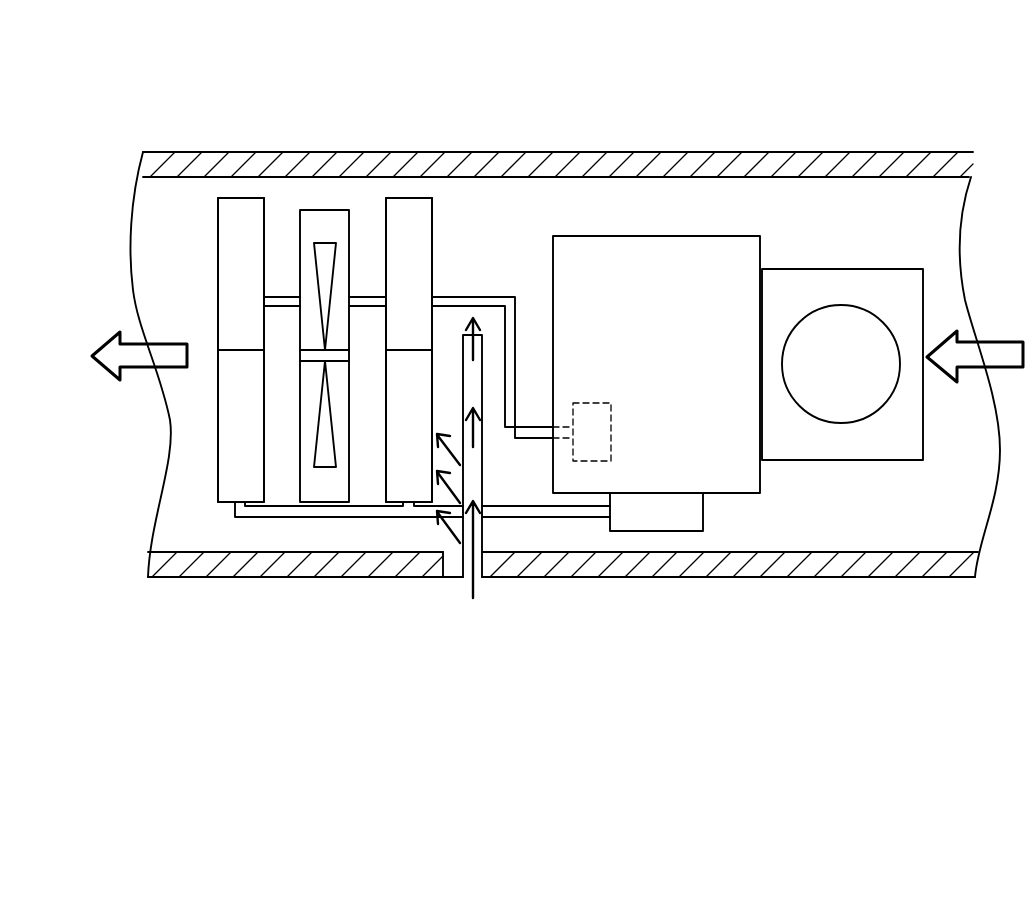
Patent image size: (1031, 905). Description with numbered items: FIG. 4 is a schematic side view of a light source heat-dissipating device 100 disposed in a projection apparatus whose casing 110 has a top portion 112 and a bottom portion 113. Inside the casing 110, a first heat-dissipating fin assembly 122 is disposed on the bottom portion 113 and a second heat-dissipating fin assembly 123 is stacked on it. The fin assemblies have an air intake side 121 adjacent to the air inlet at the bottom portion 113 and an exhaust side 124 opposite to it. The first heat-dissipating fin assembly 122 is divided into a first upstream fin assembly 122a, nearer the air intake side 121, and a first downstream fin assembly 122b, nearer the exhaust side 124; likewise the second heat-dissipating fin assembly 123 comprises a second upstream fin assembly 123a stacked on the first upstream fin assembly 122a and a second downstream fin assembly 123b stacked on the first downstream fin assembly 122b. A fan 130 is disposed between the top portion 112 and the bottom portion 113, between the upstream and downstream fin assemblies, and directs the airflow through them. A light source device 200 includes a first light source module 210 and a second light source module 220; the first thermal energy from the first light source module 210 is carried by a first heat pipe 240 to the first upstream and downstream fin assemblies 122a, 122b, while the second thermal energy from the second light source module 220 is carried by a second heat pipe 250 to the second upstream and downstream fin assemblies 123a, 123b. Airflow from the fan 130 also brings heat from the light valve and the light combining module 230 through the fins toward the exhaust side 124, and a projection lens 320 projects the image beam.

The light source heat-dissipating device 100 is at (101, 42).
The casing 110 is at (713, 150).
The top portion 112 is at (557, 165).
The bottom portion 113 is at (197, 570).
The air intake side 121 is at (437, 222).
The first heat-dissipating fin assembly 122 is at (390, 633).
The first upstream fin assembly 122a is at (392, 482).
The first downstream fin assembly 122b is at (257, 482).
The second heat-dissipating fin assembly 123 is at (393, 72).
The second upstream fin assembly 123a is at (403, 210).
The second downstream fin assembly 123b is at (245, 210).
The exhaust side 124 is at (215, 222).
The fan 130 is at (300, 255).
The light source device 200 is at (750, 672).
The first light source module 210 is at (655, 513).
The second light source module 220 is at (590, 461).
The light combining module 230 is at (732, 475).
The first heat pipe 240 is at (550, 513).
The second heat pipe 250 is at (522, 433).
The projection lens 320 is at (872, 285).